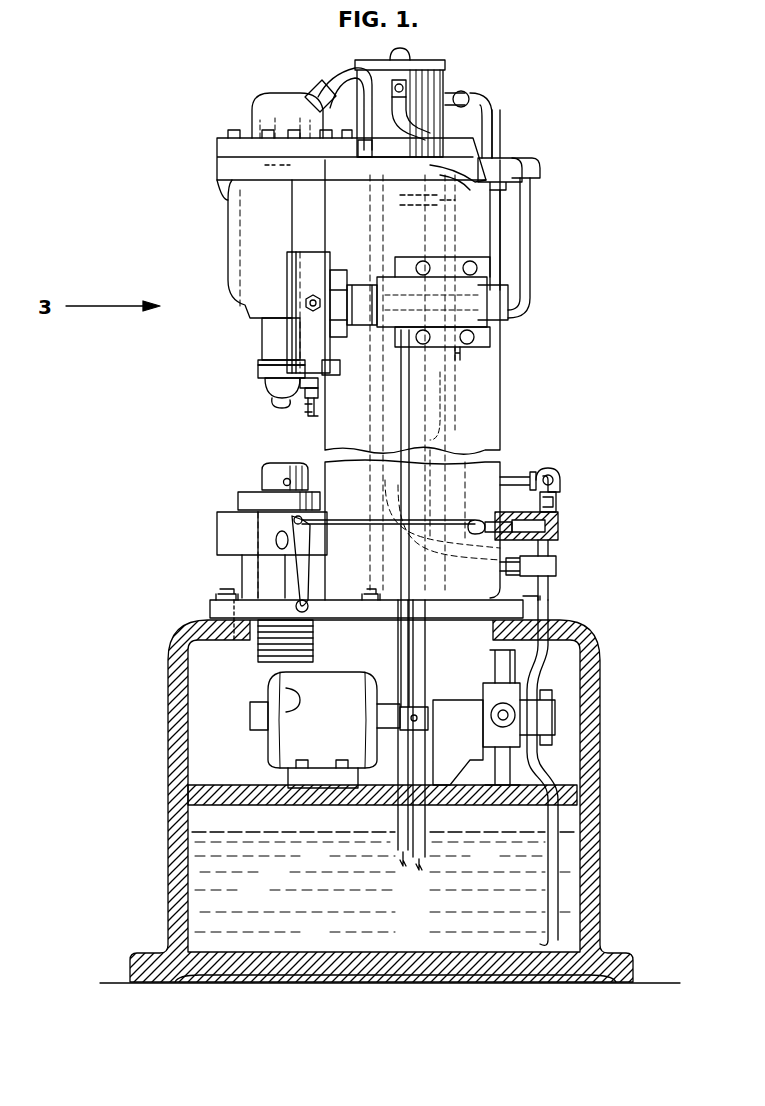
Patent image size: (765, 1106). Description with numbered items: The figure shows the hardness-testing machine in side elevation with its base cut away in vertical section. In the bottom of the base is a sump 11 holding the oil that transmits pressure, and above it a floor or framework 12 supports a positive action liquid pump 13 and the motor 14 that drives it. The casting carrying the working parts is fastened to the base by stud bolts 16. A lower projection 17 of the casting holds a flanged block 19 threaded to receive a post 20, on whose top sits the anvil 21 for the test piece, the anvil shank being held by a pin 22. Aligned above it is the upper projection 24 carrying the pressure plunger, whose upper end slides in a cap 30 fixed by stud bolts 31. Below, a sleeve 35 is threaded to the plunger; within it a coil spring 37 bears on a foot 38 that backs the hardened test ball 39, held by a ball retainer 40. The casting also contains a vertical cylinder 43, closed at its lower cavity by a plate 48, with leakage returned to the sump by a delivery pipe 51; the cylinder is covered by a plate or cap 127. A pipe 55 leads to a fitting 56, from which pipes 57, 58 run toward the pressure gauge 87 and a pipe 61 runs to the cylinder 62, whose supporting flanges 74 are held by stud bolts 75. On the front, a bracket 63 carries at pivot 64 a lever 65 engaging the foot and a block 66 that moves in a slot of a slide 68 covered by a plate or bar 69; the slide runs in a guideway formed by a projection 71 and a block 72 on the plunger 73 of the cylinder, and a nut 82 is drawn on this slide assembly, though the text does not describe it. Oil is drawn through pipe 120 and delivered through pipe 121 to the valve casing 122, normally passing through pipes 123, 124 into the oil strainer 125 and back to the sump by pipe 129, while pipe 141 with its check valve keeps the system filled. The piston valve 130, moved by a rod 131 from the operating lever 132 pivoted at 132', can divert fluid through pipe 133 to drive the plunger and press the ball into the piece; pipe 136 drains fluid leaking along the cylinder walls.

The sump 11 is at (190, 828).
The floor or framework 12 is at (250, 788).
The positive action liquid pump 13 is at (485, 695).
The motor 14 is at (325, 730).
The stud bolts 16 is at (218, 590).
The projection 17 is at (217, 524).
The flanged block 19 is at (238, 498).
The post 20 is at (168, 762).
The anvil 21 is at (270, 470).
The pin 22 is at (283, 482).
The upper projection 24 is at (228, 264).
The cap 30 is at (270, 100).
The stud bolts 31 is at (233, 130).
The sleeve 35 is at (262, 345).
The coil spring 37 is at (258, 361).
The foot 38 is at (258, 373).
The test ball 39 is at (272, 404).
The ball retainer 40 is at (270, 392).
The vertical cylinder 43 is at (440, 198).
The plate 48 is at (450, 385).
The delivery pipe 51 is at (360, 138).
The pipe 55 is at (462, 160).
The fitting 56 is at (513, 160).
The pipe 57 is at (530, 248).
The pipe 58 is at (442, 302).
The pipe 61 is at (498, 232).
The cylinder 62 is at (447, 350).
The bracket 63 is at (330, 352).
The pivot 64 is at (318, 382).
The lever 65 is at (305, 410).
The block 66 is at (318, 412).
The slide 68 is at (318, 394).
The plate or bar 69 is at (312, 260).
The projection 71 is at (292, 302).
The block 72 is at (345, 337).
The plunger 73 is at (368, 285).
The supporting flanges 74 is at (446, 262).
The stud bolts 75 is at (502, 418).
The nut 82 is at (315, 292).
The pressure gauge 87 is at (265, 165).
The pipe 120 is at (560, 862).
The pipe 121 is at (545, 677).
The valve casing 122 is at (558, 526).
The pipe 123 is at (522, 480).
The pipe 124 is at (388, 120).
The oil strainer 125 is at (445, 86).
The plate or cap 127 is at (448, 160).
The pipe 129 is at (492, 103).
The piston valve 130 is at (522, 520).
The rod 131 is at (440, 524).
The operating lever 132 is at (271, 561).
The pivot 132' is at (325, 608).
The pipe 133 is at (338, 70).
The pipe 136 is at (401, 386).
The pipe 141 is at (500, 128).